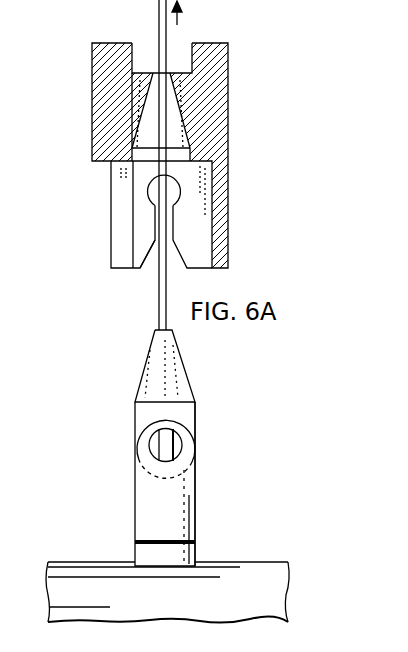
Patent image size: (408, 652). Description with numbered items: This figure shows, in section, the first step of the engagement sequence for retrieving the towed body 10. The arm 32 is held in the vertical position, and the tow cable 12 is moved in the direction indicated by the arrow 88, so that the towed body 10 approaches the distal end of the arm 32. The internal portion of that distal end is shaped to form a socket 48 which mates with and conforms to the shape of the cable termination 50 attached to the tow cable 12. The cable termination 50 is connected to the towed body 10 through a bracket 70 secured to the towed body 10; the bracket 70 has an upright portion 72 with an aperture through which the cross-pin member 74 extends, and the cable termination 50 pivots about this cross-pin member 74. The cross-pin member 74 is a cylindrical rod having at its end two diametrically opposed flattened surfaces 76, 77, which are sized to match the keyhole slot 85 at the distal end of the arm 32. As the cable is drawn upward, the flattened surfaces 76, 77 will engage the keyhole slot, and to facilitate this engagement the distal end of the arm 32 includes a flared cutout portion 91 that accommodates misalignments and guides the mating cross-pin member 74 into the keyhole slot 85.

The towed body 10 is at (85, 562).
The tow cable 12 is at (158, 17).
The arm 32 is at (228, 97).
The socket 48 is at (172, 108).
The cable termination 50 is at (140, 382).
The bracket 70 is at (197, 549).
The upright portion 72 is at (196, 491).
The cross-pin member 74 is at (150, 436).
The flattened surface 76 is at (165, 445).
The flattened surface 77 is at (176, 440).
The keyhole slot 85 is at (155, 223).
The arrow 88 is at (181, 14).
The flared cutout portion 91 is at (150, 262).